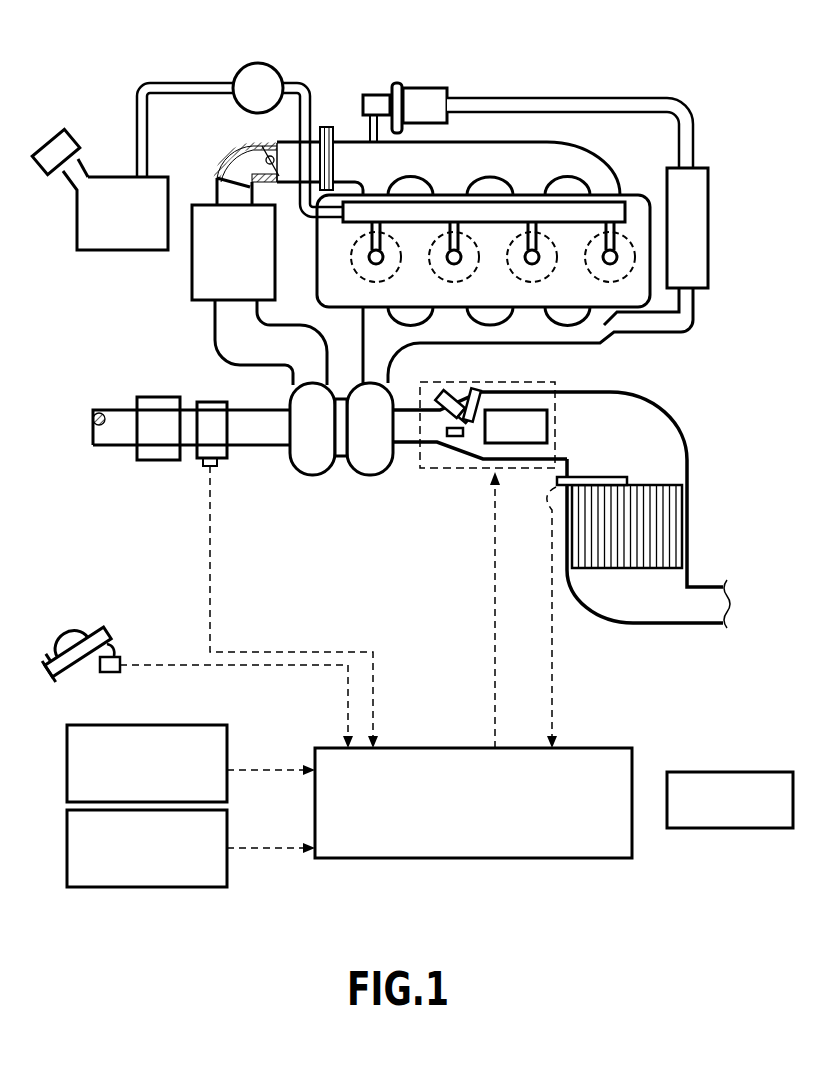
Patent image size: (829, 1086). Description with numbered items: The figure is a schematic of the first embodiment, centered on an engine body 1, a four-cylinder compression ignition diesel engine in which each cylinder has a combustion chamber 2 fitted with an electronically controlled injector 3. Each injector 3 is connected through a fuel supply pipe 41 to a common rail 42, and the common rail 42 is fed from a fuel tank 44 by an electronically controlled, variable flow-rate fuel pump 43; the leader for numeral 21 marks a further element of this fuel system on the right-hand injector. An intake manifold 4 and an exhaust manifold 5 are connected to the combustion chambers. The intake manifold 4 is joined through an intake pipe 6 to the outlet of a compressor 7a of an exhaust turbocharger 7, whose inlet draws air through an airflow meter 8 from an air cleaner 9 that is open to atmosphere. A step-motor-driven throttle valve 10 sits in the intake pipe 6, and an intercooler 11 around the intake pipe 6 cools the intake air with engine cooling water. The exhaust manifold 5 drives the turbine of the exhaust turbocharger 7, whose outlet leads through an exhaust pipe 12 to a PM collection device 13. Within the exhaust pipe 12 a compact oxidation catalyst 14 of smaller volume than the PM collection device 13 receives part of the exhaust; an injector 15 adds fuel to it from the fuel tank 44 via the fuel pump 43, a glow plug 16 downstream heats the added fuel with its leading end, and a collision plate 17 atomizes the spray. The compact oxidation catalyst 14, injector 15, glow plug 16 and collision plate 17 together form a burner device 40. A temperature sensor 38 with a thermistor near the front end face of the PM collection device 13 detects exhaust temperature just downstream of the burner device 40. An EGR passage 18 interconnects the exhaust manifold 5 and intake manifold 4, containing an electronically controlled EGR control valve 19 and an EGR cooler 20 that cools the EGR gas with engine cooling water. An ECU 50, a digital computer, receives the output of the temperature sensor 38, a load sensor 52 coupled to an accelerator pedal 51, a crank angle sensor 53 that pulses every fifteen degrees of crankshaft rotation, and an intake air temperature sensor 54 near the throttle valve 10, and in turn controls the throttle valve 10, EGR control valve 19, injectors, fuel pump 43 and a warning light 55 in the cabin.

The engine body 1 is at (647, 186).
The combustion chamber 2 is at (330, 282).
The injector 3 is at (381, 262).
The intake manifold 4 is at (592, 163).
The exhaust manifold 5 is at (497, 333).
The intake pipe 6 is at (217, 193).
The exhaust turbocharger 7 is at (341, 429).
The compressor 7a is at (308, 478).
The airflow meter 8 is at (200, 458).
The air cleaner 9 is at (153, 397).
The throttle valve 10 is at (250, 143).
The intercooler 11 is at (197, 283).
The exhaust pipe 12 is at (400, 460).
The PM collection device 13 is at (678, 512).
The compact oxidation catalyst 14 is at (518, 430).
The injector 15 is at (444, 418).
The glow plug 16 is at (470, 423).
The collision plate 17 is at (450, 437).
The EGR passage 18 is at (543, 98).
The EGR control valve 19 is at (372, 95).
The EGR cooler 20 is at (699, 212).
The injector stem 21 is at (607, 226).
The temperature sensor 38 is at (558, 486).
The burner device 40 is at (482, 474).
The fuel supply pipe 41 is at (370, 230).
The common rail 42 is at (458, 205).
The fuel pump 43 is at (258, 62).
The fuel tank 44 is at (88, 222).
The ECU 50 is at (478, 860).
The accelerator pedal 51 is at (110, 640).
The load sensor 52 is at (123, 658).
The crank angle sensor 53 is at (168, 725).
The intake air temperature sensor 54 is at (145, 888).
The warning light 55 is at (733, 770).